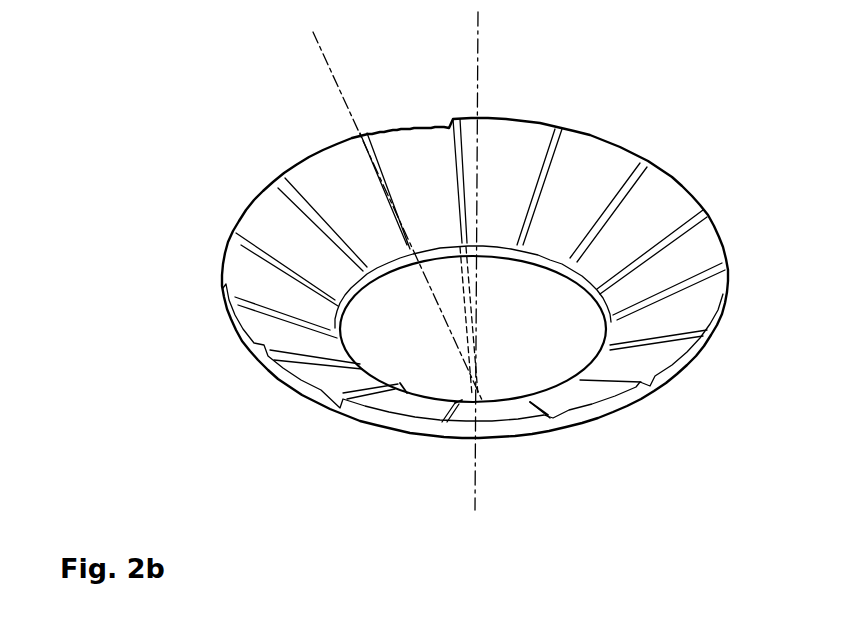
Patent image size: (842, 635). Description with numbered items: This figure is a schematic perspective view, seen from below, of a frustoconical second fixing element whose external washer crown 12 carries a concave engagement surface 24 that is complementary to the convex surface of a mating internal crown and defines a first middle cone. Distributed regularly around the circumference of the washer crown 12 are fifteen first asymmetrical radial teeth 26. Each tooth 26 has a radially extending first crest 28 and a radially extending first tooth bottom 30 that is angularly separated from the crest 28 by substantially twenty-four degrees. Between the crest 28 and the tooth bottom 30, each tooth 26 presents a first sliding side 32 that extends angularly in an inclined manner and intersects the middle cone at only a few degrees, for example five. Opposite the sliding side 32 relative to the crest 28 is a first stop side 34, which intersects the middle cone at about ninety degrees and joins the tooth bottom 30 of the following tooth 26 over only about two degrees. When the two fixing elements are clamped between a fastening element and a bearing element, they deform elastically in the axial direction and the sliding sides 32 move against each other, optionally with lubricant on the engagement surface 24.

The external washer crown 12 is at (567, 427).
The concave engagement surface 24 is at (650, 183).
The first asymmetrical radial teeth 26 is at (257, 203).
The first crest 28 is at (373, 135).
The first tooth bottom 30 is at (450, 150).
The first sliding side 32 is at (578, 170).
The first stop side 34 is at (263, 223).